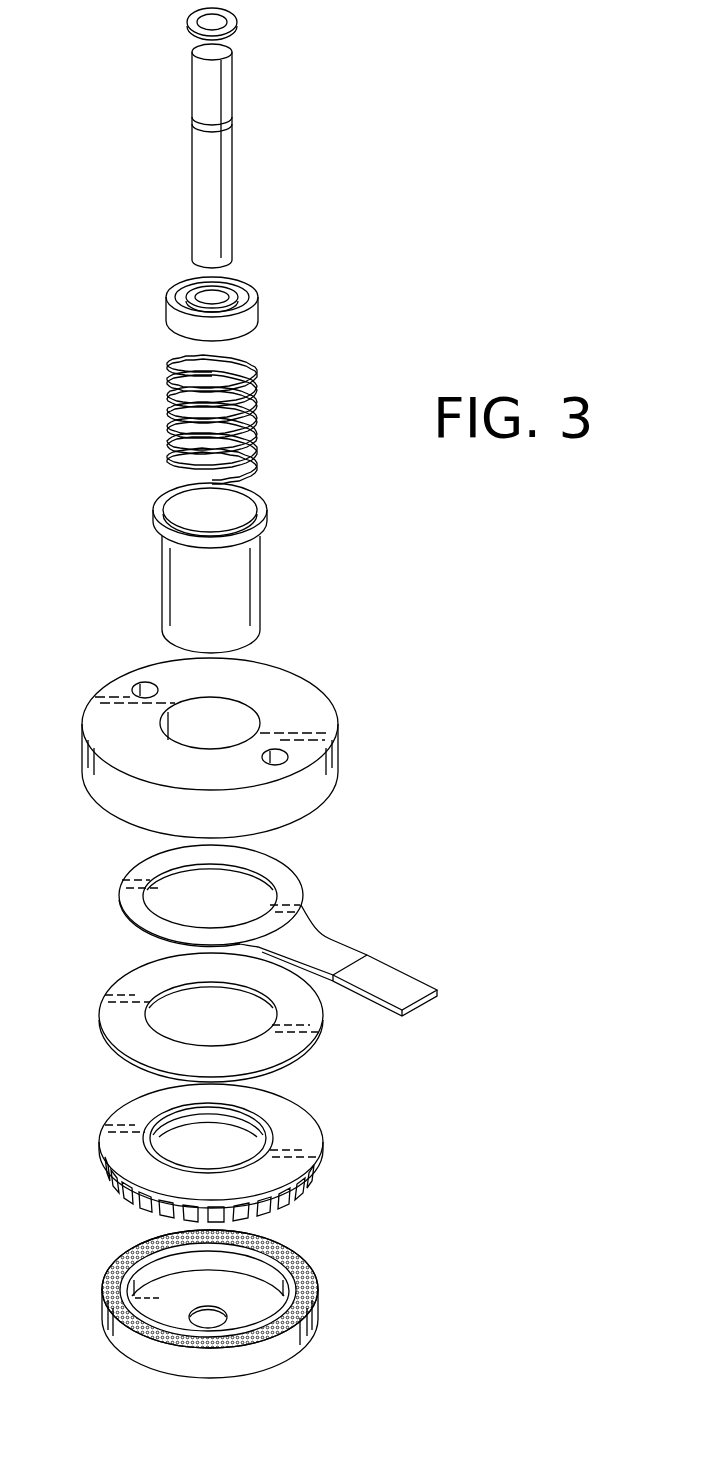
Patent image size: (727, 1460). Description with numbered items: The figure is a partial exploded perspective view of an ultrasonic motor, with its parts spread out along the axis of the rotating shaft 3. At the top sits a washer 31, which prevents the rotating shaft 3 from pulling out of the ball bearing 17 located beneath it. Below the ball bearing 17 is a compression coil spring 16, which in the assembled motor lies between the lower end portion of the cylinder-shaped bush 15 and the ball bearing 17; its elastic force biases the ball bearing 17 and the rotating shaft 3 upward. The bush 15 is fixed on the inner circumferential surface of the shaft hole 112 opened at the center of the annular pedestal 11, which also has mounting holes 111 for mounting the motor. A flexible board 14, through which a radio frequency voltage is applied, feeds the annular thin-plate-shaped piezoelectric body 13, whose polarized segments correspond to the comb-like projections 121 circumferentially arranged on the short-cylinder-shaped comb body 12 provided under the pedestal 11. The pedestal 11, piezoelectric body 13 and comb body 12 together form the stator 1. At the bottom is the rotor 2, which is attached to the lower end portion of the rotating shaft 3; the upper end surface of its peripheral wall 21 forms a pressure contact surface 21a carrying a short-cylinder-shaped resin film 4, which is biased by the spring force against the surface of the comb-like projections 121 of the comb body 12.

The stator 1 is at (420, 872).
The rotor 2 is at (201, 1311).
The rotating shaft 3 is at (200, 152).
The resin film 4 is at (313, 1275).
The annular pedestal 11 is at (218, 727).
The comb body 12 is at (222, 1153).
The piezoelectric body 13 is at (110, 1023).
The flexible board 14 is at (317, 940).
The bush 15 is at (260, 576).
The compression coil spring 16 is at (167, 408).
The ball bearing 17 is at (258, 310).
The peripheral wall 21 is at (137, 1348).
The pressure contact surface 21a is at (105, 1281).
The washer 31 is at (237, 24).
The mounting holes 111 is at (138, 688).
The shaft hole 112 is at (238, 718).
The comb-like projections 121 is at (300, 1200).